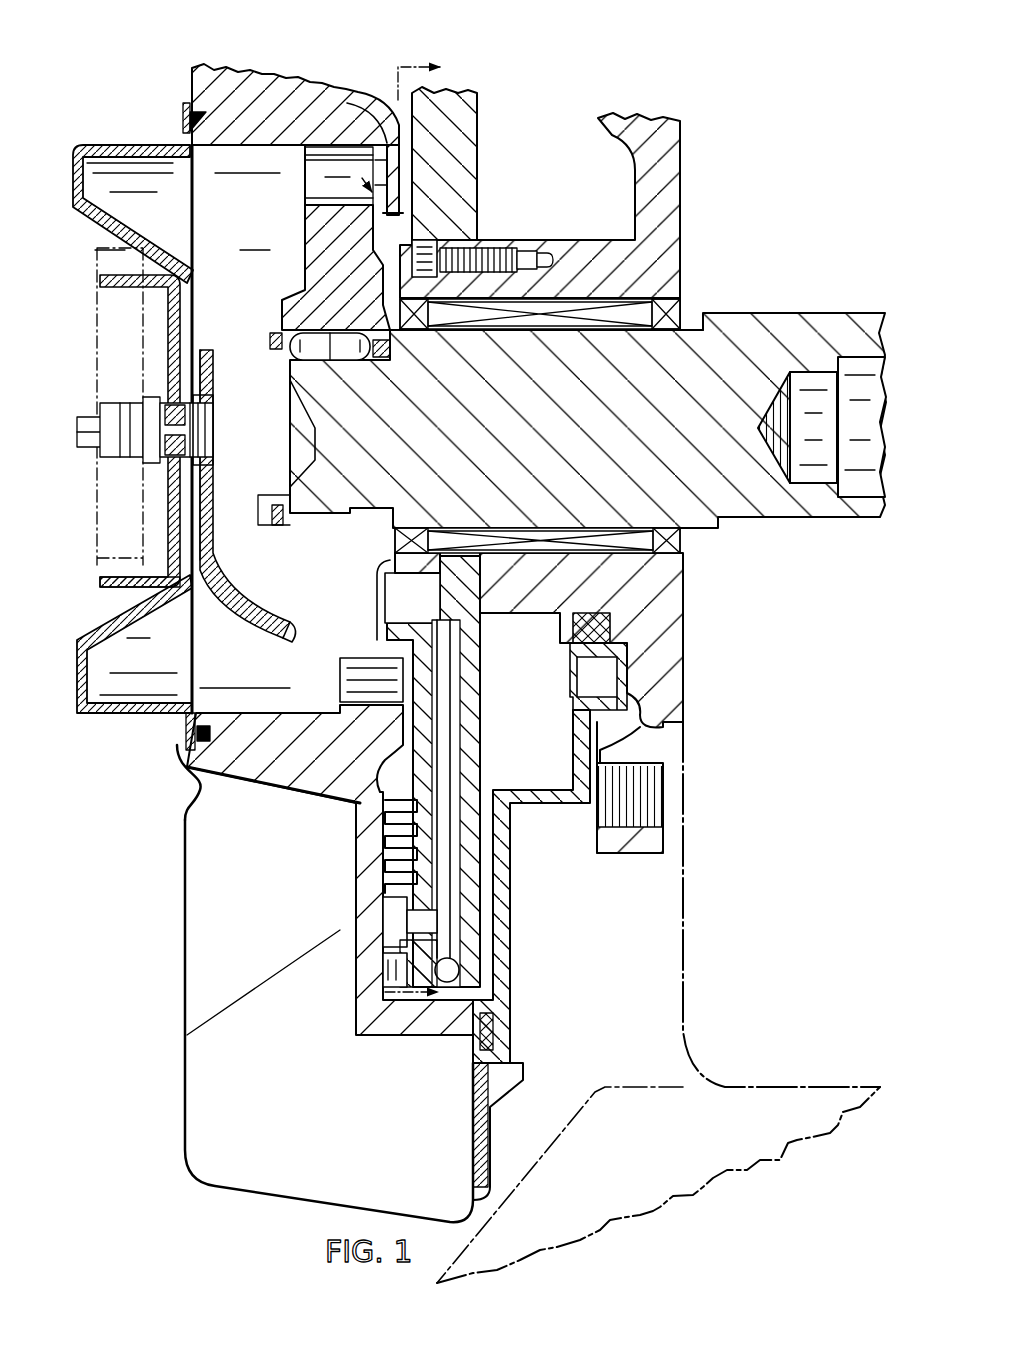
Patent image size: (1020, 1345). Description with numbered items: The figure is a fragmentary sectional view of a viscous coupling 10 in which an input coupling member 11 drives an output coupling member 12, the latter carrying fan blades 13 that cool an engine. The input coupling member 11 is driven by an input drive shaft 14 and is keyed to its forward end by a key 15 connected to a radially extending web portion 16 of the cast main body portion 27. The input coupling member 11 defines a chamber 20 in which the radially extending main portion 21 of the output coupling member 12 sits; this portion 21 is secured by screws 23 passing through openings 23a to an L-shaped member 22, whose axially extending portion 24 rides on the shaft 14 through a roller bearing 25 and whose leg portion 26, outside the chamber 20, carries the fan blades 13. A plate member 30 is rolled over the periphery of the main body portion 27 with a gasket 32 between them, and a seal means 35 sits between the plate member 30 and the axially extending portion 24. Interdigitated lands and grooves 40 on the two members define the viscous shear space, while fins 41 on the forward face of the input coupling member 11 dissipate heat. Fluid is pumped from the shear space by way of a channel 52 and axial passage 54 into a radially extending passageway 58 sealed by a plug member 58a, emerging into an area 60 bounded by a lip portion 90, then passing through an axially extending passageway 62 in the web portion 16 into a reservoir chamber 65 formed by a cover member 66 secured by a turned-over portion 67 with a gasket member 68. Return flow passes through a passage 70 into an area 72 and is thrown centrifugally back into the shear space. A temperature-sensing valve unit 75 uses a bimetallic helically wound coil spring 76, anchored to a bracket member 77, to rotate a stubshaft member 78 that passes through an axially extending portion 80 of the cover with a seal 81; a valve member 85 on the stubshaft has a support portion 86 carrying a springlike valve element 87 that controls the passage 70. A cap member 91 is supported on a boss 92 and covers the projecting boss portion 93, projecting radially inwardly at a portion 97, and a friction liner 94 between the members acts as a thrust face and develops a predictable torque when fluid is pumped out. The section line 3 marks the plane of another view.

The viscous coupling 10 is at (712, 98).
The section line 3- 3 is at (439, 533).
The input coupling member 11 is at (455, 955).
The output coupling member 12 is at (445, 783).
The fan blades 13 is at (687, 1027).
The input drive shaft 14 is at (580, 428).
The key 15 is at (290, 375).
The web portion 16 is at (293, 388).
The chamber 20 is at (525, 770).
The radially extending main portion 21 is at (487, 753).
The L-shaped member 22 is at (585, 690).
The screws 23 is at (428, 230).
The openings 23a is at (510, 277).
The axially extending portion 24 is at (568, 208).
The roller bearing 25 is at (692, 540).
The leg portion 26 is at (693, 705).
The main body portion 27 is at (257, 787).
The plate member 30 is at (497, 950).
The gasket 32 is at (507, 1030).
The seal means 35 is at (568, 627).
The interdigitated lands and grooves 40 is at (325, 832).
The fins 41 is at (200, 1148).
The channel 52 is at (383, 932).
The axial passage 54 is at (383, 905).
The radially extending passageway 58 is at (455, 898).
The plug member 58a is at (461, 973).
The area 60 is at (380, 258).
The axially extending passageway 62 is at (310, 87).
The reservoir chamber 65 is at (155, 692).
The cover member 66 is at (164, 465).
The turned-over portion 67 is at (180, 748).
The gasket member 68 is at (207, 713).
The passage 70 is at (266, 787).
The area 72 is at (440, 681).
The temperature-sensing valve unit 75 is at (93, 537).
The bimetallic helically wound coil spring 76 is at (100, 345).
The bracket member 77 is at (105, 264).
The stubshaft member 78 is at (100, 455).
The axially extending portion 80 is at (200, 460).
The seal 81 is at (213, 420).
The valve member 85 is at (215, 553).
The support portion 86 is at (228, 616).
The springlike valve element 87 is at (297, 642).
The lip portion 90 is at (372, 240).
The cap member 91 is at (337, 795).
The boss 92 is at (302, 143).
The projecting boss portion 93 is at (380, 648).
The friction liner 94 is at (383, 975).
The radially inward cap portion 97 is at (412, 598).